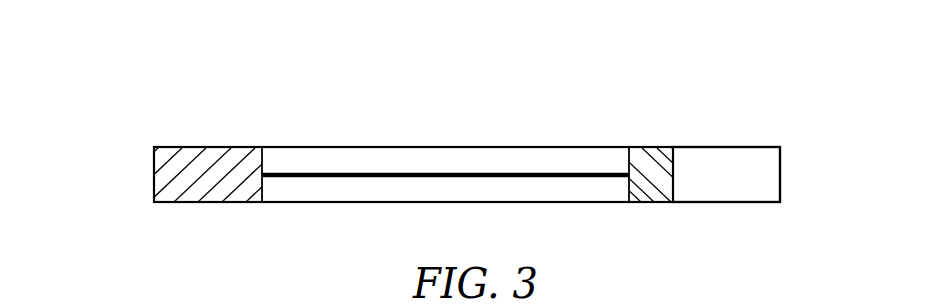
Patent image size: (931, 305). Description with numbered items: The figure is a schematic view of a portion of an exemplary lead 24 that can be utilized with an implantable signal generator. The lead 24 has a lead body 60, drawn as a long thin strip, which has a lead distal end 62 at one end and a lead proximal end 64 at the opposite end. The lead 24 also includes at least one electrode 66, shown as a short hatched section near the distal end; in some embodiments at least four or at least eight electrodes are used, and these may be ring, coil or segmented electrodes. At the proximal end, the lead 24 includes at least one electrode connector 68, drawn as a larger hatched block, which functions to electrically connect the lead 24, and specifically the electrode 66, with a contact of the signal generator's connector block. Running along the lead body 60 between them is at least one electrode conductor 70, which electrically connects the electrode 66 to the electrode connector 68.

The lead 24 is at (106, 53).
The lead body 60 is at (340, 215).
The lead distal end 62 is at (766, 134).
The lead proximal end 64 is at (166, 136).
The electrode 66 is at (648, 193).
The electrode connector 68 is at (202, 192).
The electrode conductor 70 is at (386, 173).